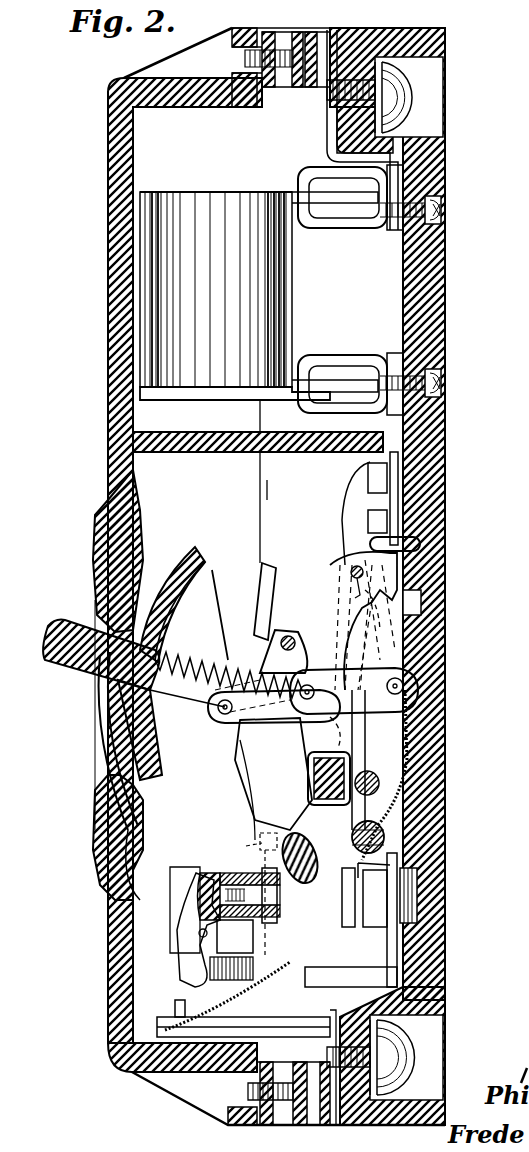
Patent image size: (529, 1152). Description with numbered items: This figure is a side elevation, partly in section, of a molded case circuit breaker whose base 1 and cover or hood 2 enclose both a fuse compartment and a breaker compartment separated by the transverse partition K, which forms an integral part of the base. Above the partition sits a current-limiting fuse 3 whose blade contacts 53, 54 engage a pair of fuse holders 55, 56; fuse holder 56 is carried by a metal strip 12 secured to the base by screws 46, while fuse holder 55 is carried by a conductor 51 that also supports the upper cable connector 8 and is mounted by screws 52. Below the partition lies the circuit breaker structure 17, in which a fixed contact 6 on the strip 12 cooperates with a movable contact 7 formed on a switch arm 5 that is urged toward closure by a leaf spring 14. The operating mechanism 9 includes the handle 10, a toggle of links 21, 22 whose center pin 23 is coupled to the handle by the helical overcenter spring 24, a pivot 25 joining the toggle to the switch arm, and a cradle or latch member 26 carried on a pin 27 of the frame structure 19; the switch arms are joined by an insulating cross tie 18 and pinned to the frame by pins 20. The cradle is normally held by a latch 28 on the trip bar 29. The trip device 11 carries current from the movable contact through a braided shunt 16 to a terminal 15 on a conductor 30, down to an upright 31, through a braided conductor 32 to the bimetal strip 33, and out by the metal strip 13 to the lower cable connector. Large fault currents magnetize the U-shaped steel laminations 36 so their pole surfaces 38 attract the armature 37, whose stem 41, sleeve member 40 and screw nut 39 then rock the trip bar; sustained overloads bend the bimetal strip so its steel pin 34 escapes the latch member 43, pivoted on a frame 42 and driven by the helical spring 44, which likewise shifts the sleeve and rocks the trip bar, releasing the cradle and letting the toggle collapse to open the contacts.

The base 1 is at (432, 457).
The cover or hood 2 is at (120, 470).
The current-limiting fuse 3 is at (280, 299).
The movable switch arm 5 is at (345, 599).
The fixed contact 6 is at (372, 463).
The movable contact 7 is at (364, 487).
The cable connector 8 is at (310, 45).
The operating mechanism 9 is at (325, 615).
The handle 10 is at (60, 657).
The electroresponsive trip device 11 is at (185, 821).
The metal strip 12 is at (397, 500).
The metal strip 13 is at (333, 1110).
The leaf spring 14 is at (352, 580).
The terminal 15 is at (356, 825).
The braided shunt 16 is at (406, 757).
The circuit breaker structure 17 is at (213, 509).
The cross tie 18 is at (328, 752).
The frame structure 19 is at (298, 780).
The pin 20 is at (398, 773).
The toggle link 21 is at (310, 706).
The toggle link 22 is at (328, 672).
The center pin 23 is at (283, 651).
The helical overcenter spring 24 is at (186, 660).
The pivot 25 is at (400, 684).
The cradle or latch member 26 is at (240, 773).
The pin 27 is at (270, 612).
The latch 28 is at (262, 835).
The trip bar 29 is at (265, 860).
The conductor 30 is at (398, 940).
The projection or upright 31 is at (355, 977).
The braided conductor 32 is at (292, 960).
The bimetal strip 33 is at (282, 1024).
The steel pin 34 is at (175, 1008).
The U-shaped steel laminations 36 is at (410, 895).
The movable armature 37 is at (358, 915).
The pole surface 38 is at (385, 863).
The screw nut 39 is at (213, 870).
The sleeve member 40 is at (270, 915).
The stem 41 is at (344, 905).
The frame 42 is at (178, 935).
The latch member 43 is at (185, 968).
The helical spring 44 is at (231, 978).
The screw 46 is at (430, 383).
The conductor 51 is at (330, 125).
The screw 52 is at (388, 95).
The blade contact 53 is at (230, 200).
The blade contact 54 is at (222, 395).
The fuse holder 55 is at (366, 228).
The fuse holder 56 is at (365, 362).
The transverse partition K is at (275, 492).